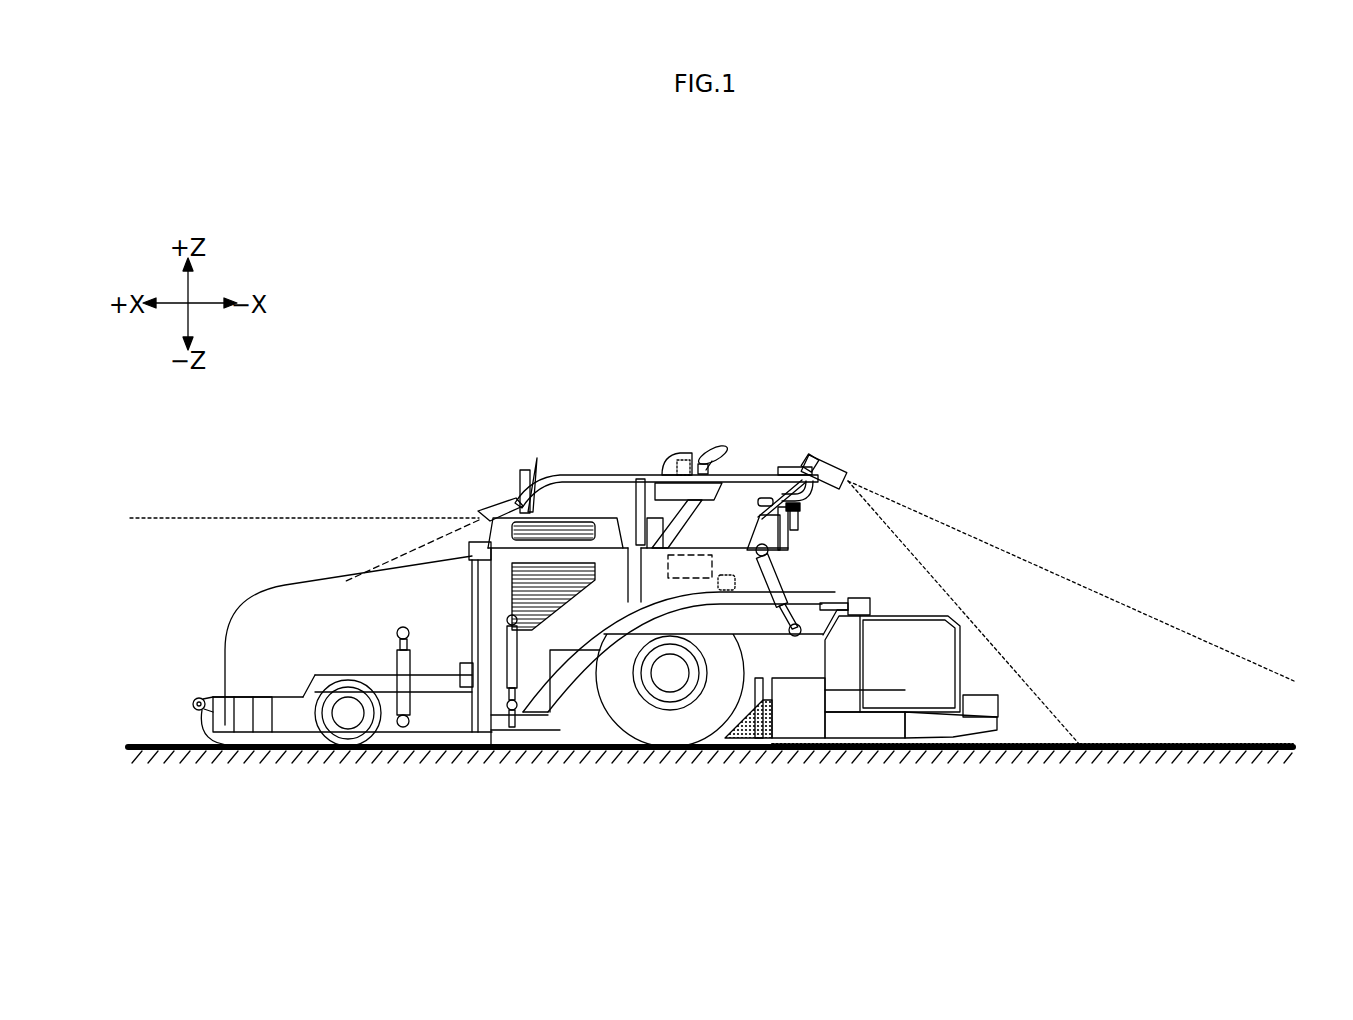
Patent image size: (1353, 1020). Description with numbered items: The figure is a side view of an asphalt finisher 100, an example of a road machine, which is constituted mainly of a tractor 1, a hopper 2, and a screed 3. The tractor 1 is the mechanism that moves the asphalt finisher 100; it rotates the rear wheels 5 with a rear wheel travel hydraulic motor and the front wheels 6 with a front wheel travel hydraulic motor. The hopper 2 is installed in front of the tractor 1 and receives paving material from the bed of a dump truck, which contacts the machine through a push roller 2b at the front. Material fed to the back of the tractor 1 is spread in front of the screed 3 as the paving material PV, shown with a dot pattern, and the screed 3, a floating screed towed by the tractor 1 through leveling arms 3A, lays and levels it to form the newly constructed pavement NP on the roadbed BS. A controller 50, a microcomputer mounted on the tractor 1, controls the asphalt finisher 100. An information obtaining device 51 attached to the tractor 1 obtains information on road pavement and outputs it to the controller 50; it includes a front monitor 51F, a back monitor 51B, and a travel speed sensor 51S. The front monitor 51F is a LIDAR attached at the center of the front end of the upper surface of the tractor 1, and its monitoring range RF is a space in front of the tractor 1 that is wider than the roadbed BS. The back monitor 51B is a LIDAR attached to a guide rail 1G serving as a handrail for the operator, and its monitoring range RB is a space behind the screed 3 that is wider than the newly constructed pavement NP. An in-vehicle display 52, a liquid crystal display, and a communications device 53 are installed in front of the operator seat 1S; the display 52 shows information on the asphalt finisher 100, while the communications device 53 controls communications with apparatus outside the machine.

The asphalt finisher 100 is at (727, 377).
The tractor 1 is at (571, 497).
The guide rail 1G is at (589, 472).
The operator seat 1S is at (805, 454).
The hopper 2 is at (233, 613).
The push roller 2b is at (233, 750).
The screed 3 is at (892, 734).
The leveling arms 3A is at (705, 625).
The rear wheels 5 is at (656, 726).
The front wheels 6 is at (338, 728).
The controller 50 is at (695, 546).
The information obtaining device 51 is at (670, 484).
The front monitor 51F is at (503, 501).
The travel speed sensor 51S is at (727, 572).
The back monitor 51B is at (830, 455).
The in-vehicle display 52 is at (698, 450).
The communications device 53 is at (663, 462).
The roadbed BS is at (161, 750).
The newly constructed pavement NP is at (992, 750).
The paving material PV is at (760, 735).
The monitoring range RF is at (298, 513).
The monitoring range RB is at (1032, 563).